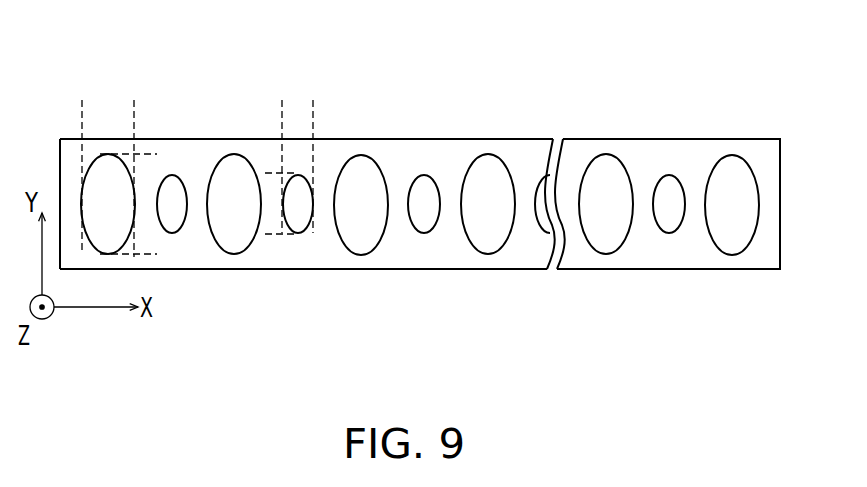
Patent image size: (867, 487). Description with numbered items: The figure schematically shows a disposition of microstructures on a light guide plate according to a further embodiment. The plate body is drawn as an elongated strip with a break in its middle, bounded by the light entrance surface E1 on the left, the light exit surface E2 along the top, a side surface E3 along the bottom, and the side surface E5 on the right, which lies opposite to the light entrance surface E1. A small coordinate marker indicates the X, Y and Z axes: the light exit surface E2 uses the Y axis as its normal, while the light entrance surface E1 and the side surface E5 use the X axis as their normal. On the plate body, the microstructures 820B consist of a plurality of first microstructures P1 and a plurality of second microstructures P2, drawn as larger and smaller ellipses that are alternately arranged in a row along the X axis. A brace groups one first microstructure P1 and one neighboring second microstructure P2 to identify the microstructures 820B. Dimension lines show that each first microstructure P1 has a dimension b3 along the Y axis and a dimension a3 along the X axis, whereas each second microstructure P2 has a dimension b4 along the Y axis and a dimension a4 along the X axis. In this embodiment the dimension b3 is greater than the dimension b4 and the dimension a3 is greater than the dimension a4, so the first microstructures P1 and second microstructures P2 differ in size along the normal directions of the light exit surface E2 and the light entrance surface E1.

The light entrance surface E1 is at (60, 180).
The light exit surface E2 is at (492, 138).
The side surface E3 is at (402, 233).
The side surface E5 is at (780, 228).
The microstructures 820B is at (396, 138).
The first microstructure P1 is at (360, 155).
The second microstructure P2 is at (425, 175).
The dimension of each first microstructure along the X axis a3 is at (134, 110).
The dimension of each second microstructure along the X axis a4 is at (337, 110).
The dimension of each first microstructure along the Y axis b3 is at (148, 154).
The dimension of each second microstructure along the Y axis b4 is at (272, 173).